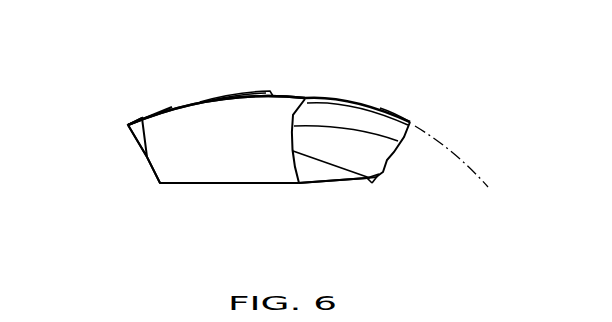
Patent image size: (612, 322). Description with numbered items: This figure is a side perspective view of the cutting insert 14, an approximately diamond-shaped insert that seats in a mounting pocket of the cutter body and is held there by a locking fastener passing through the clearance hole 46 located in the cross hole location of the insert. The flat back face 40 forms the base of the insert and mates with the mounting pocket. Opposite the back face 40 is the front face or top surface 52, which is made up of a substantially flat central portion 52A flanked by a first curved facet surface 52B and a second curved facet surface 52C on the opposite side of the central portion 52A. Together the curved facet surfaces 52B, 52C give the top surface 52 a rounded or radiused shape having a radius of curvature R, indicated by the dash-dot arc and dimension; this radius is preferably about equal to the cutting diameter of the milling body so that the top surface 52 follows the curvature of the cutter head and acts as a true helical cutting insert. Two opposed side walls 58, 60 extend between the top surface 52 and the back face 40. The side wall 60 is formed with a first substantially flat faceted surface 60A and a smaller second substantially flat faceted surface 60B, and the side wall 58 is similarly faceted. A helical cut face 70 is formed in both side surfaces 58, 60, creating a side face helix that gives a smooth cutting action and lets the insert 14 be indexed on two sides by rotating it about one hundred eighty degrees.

The cutting insert 14 is at (345, 47).
The back face 40 is at (200, 194).
The clearance hole 46 is at (243, 93).
The top surface 52 is at (311, 84).
The central portion 52A is at (260, 92).
The first curved facet surface 52B is at (355, 118).
The second curved facet surface 52C is at (174, 108).
The side wall 58 is at (132, 159).
The side wall 60 is at (363, 152).
The first substantially flat faceted surface 60A is at (330, 173).
The second substantially flat faceted surface 60B is at (374, 178).
The helical cut face 70 is at (137, 129).
The radius of curvature R is at (463, 172).